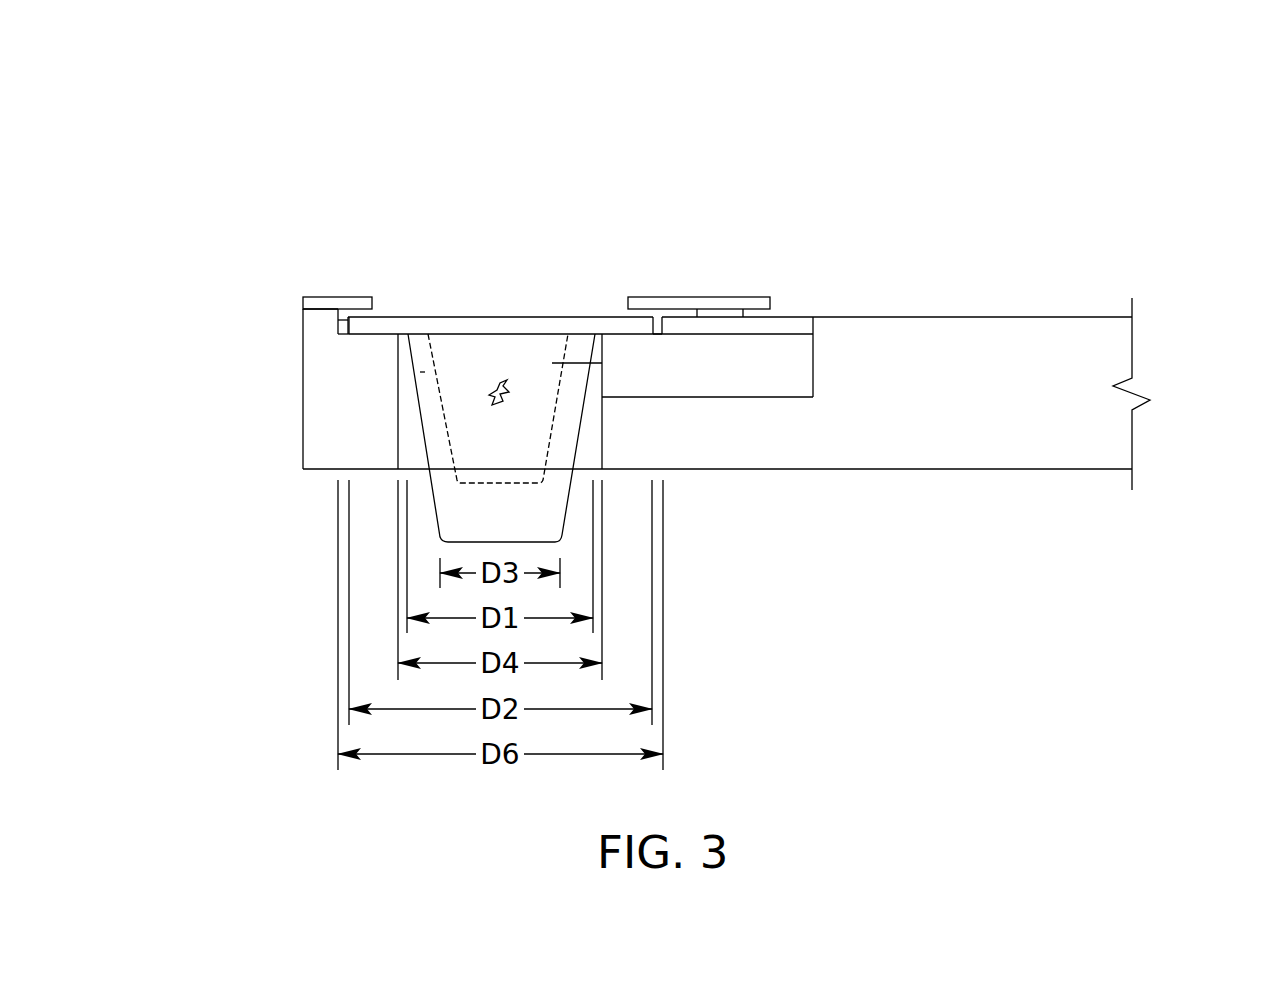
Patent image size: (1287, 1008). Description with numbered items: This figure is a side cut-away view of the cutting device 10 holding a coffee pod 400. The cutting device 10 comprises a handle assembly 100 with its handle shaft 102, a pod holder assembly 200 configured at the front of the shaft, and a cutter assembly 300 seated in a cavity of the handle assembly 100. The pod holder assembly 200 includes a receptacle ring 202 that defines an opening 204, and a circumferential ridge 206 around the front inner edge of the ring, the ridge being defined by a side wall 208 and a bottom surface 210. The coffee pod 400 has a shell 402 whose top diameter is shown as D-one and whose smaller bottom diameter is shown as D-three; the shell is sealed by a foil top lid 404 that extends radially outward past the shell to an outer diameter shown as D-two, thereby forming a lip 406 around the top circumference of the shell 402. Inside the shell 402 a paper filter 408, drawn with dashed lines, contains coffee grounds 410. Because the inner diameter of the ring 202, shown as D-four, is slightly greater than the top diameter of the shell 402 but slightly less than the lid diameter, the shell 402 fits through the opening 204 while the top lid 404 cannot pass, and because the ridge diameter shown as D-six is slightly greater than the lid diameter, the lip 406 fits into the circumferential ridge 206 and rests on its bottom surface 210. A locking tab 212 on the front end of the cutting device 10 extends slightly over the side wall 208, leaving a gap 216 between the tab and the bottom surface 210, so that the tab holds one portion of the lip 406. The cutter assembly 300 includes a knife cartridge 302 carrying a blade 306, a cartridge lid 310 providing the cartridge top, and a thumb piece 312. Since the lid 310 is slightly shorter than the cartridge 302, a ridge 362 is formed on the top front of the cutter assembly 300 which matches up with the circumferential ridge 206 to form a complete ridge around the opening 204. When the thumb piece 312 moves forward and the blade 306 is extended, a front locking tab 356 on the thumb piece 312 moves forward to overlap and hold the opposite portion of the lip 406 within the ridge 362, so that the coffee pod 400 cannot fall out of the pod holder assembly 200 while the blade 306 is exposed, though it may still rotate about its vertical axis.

The cutting device 10 is at (322, 100).
The handle assembly 100 is at (1098, 268).
The handle shaft 102 is at (1030, 365).
The pod holder assembly 200 is at (285, 287).
The receptacle ring 202 is at (342, 438).
The opening 204 is at (410, 447).
The circumferential ridge 206 is at (338, 334).
The side wall 208 is at (337, 316).
The bottom surface 210 is at (357, 336).
The locking tab 212 is at (350, 318).
The gap 216 is at (332, 328).
The cutter assembly 300 is at (787, 262).
The knife cartridge 302 is at (782, 438).
The blade 306 is at (565, 333).
The cartridge lid 310 is at (780, 357).
The thumb piece 312 is at (725, 297).
The front locking tab 356 is at (643, 297).
The ridge 362 is at (650, 335).
The coffee pod 400 is at (435, 297).
The shell 402 is at (564, 526).
The top lid 404 is at (478, 316).
The lip 406 is at (355, 297).
The paper filter 408 is at (475, 370).
The coffee grounds 410 is at (507, 380).